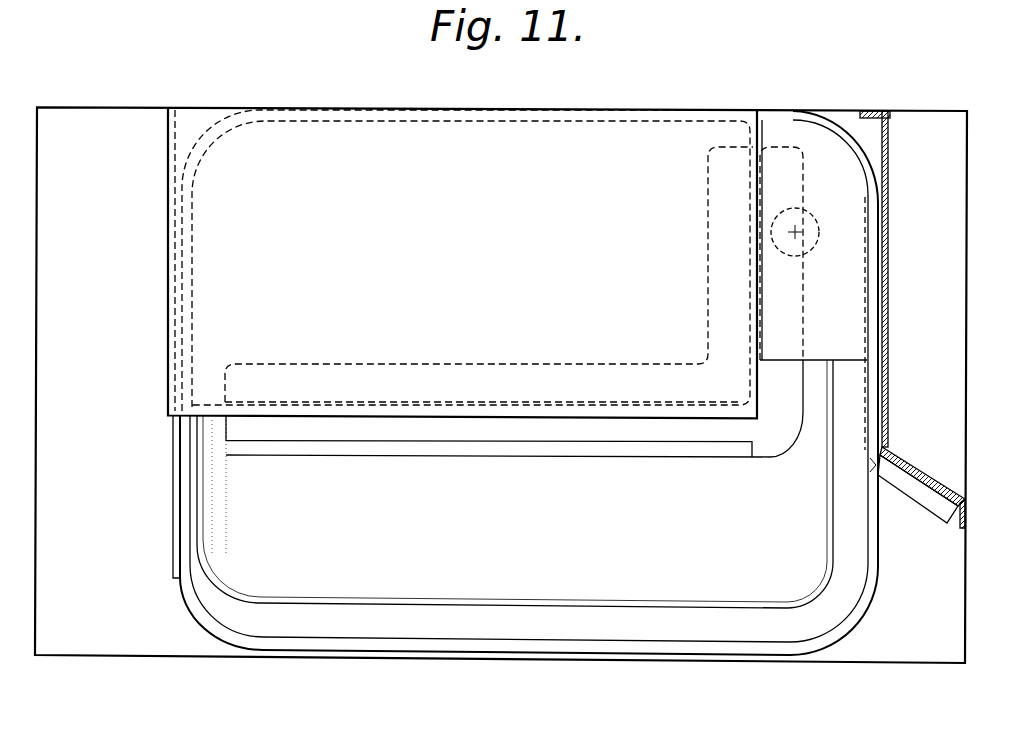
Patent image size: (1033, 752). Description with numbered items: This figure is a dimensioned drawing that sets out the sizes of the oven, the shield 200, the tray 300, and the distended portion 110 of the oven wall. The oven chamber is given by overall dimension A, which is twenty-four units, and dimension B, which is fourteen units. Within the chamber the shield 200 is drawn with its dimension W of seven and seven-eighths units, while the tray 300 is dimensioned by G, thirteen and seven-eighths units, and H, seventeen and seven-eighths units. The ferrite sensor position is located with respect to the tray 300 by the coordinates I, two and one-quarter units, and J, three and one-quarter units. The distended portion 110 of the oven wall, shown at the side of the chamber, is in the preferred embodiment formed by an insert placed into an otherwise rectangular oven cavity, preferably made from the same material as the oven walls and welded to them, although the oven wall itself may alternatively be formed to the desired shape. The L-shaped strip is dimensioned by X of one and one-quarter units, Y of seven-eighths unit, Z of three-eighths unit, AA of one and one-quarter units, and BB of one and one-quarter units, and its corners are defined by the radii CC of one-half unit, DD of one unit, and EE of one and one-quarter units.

The shield 200 is at (571, 255).
The tray 300 is at (204, 615).
The distended portion of the oven wall 110 is at (935, 490).
The oven chamber dimension A is at (35, 670).
The oven chamber dimension B is at (95, 655).
The tray dimension G is at (354, 107).
The tray dimension H is at (878, 539).
The shield dimension W is at (425, 417).
The L-shaped strip dimension X is at (215, 400).
The L-shaped strip dimension Y is at (217, 437).
The L-shaped strip dimension Z is at (217, 452).
The ferrite sensor coordinate I is at (795, 232).
The ferrite sensor coordinate J is at (837, 111).
The L-shaped strip dimension AA is at (753, 100).
The L-shaped strip dimension BB is at (733, 73).
The L-shaped strip radius CC is at (711, 151).
The L-shaped strip radius DD is at (800, 151).
The L-shaped strip radius EE is at (789, 443).